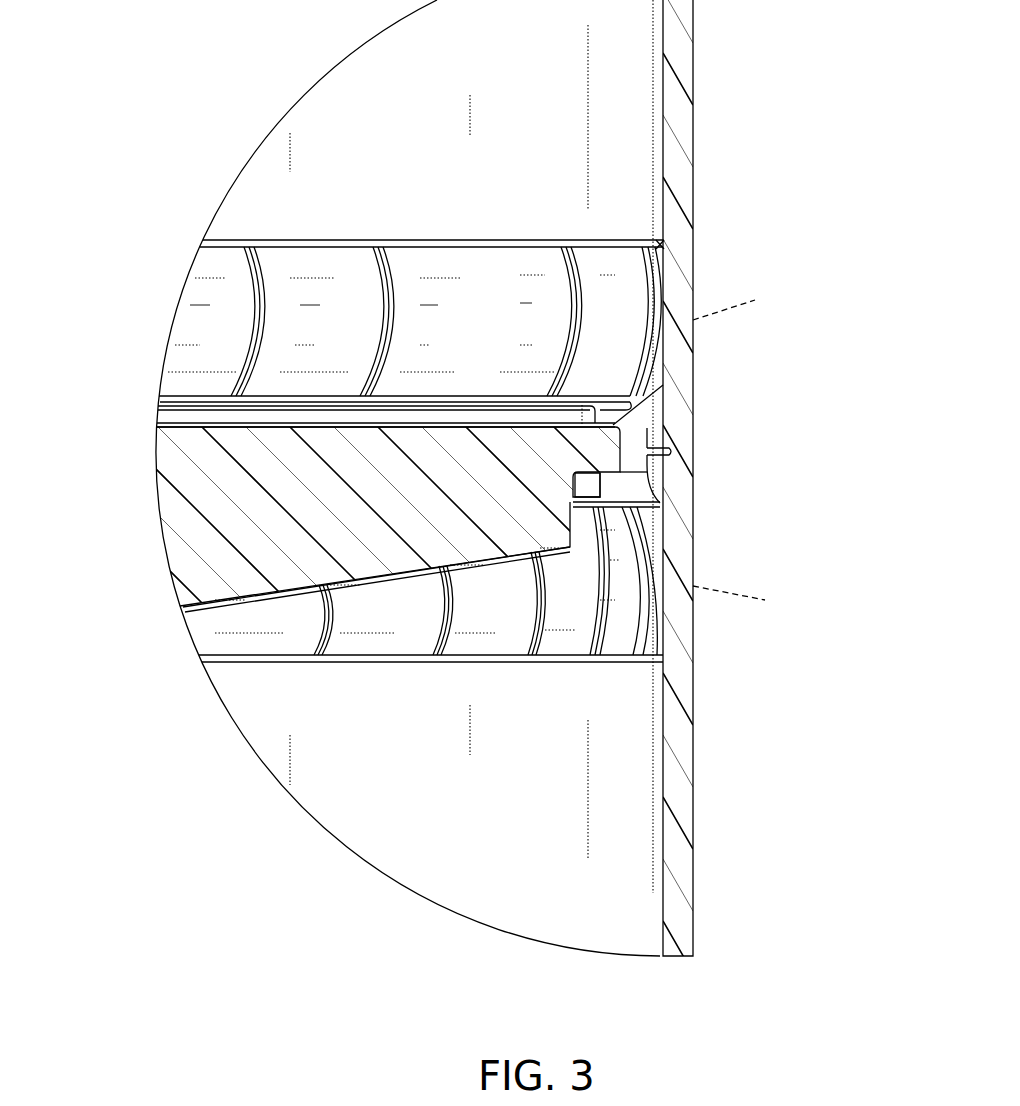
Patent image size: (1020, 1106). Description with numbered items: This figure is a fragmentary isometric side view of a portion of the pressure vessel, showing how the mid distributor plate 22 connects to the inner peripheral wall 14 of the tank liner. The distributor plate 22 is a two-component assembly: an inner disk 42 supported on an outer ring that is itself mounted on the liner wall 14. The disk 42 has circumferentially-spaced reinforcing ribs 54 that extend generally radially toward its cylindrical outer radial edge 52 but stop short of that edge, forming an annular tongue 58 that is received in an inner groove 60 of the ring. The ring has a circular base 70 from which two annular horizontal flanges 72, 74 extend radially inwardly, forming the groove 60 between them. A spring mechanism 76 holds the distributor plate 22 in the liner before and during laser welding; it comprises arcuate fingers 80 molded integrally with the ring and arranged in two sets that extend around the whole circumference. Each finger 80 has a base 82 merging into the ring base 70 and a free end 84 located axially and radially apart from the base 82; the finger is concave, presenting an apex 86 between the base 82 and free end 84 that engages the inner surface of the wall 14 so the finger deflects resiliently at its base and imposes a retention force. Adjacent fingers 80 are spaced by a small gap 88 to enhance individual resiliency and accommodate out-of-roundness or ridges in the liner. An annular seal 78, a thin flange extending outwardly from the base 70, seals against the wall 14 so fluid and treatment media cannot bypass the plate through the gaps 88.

The wall 14 is at (693, 482).
The distributor plate 22 is at (207, 266).
The inner disk 42 is at (166, 412).
The outer radial edge 52 is at (657, 440).
The reinforcing ribs 54 is at (186, 528).
The annular tongue 58 is at (603, 492).
The inner groove 60 is at (613, 425).
The circular base 70 is at (622, 472).
The annular horizontal flange 72 is at (620, 505).
The annular horizontal flange 74 is at (618, 402).
The spring mechanism 76 is at (663, 248).
The annular seal 78 is at (672, 452).
The fingers 80 is at (314, 268).
The base 82 is at (517, 392).
The free end 84 is at (237, 243).
The apex 86 is at (745, 449).
The gap 88 is at (380, 245).